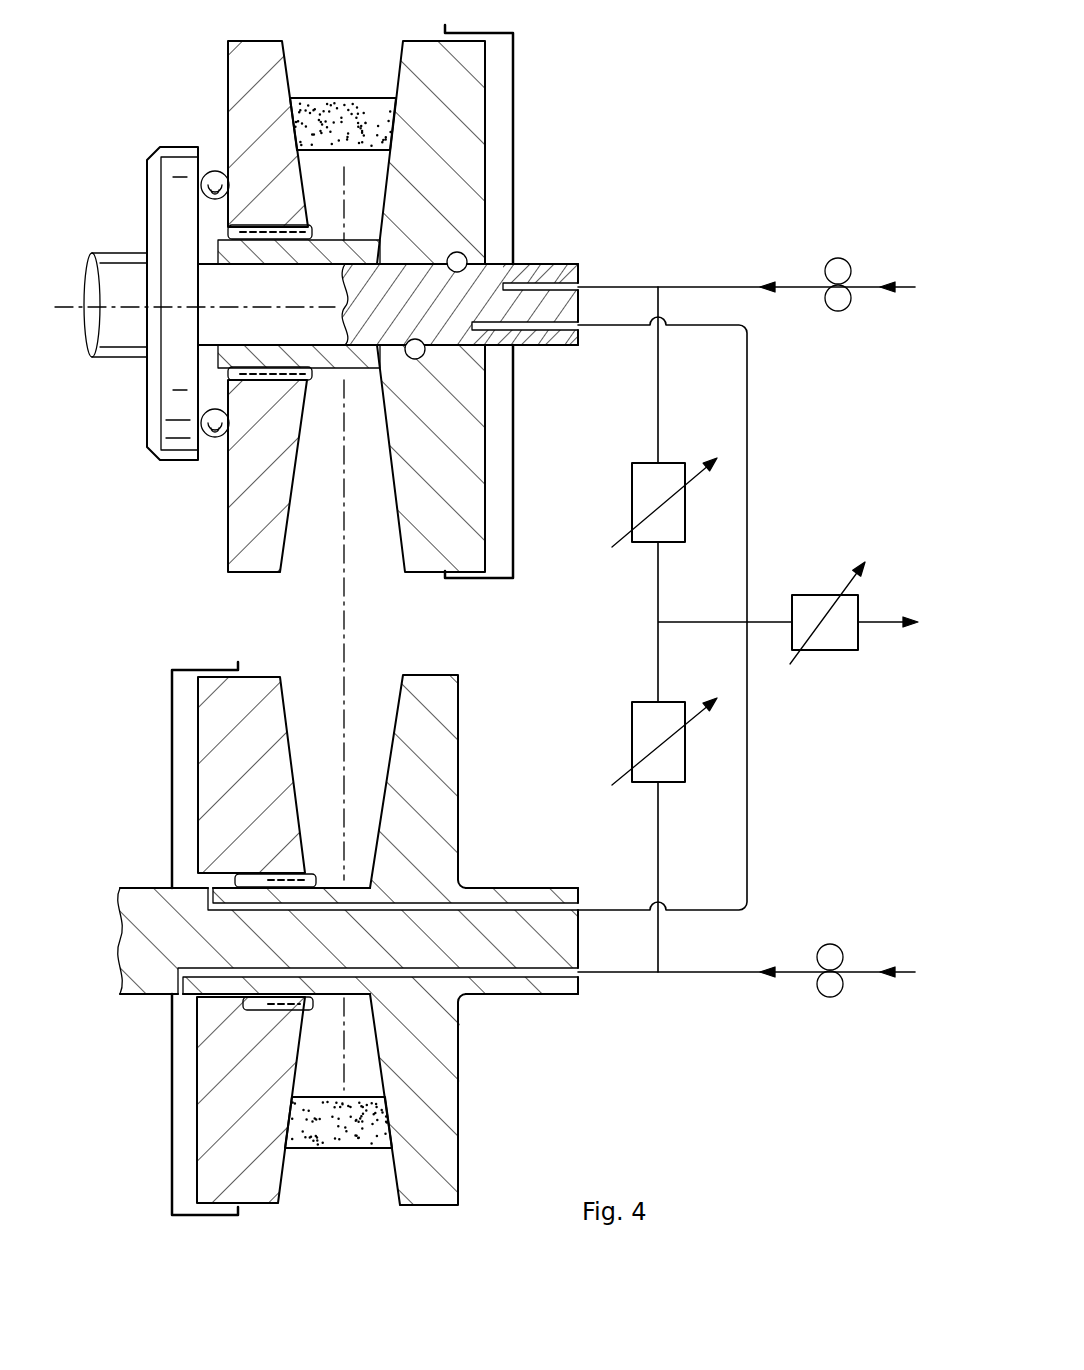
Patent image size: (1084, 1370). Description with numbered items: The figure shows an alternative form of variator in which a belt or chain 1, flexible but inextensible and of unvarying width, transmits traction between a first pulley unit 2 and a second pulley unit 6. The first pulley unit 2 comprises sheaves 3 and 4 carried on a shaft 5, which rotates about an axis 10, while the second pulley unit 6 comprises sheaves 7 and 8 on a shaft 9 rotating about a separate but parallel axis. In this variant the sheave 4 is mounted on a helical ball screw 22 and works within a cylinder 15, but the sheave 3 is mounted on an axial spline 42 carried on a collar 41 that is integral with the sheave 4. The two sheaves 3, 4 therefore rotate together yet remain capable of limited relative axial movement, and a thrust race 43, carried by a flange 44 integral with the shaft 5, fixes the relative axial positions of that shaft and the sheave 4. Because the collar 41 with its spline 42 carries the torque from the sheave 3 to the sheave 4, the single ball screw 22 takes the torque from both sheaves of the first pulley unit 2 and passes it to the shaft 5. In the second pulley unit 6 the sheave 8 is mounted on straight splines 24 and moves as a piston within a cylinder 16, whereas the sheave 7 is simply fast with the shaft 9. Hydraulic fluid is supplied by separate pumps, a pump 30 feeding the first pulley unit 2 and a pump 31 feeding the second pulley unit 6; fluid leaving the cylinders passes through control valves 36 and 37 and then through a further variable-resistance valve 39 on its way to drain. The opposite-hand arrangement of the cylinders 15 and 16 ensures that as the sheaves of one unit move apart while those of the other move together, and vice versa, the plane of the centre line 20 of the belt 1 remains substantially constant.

The belt or chain 1 is at (340, 96).
The first pulley unit 2 is at (548, 174).
The sheave 3 is at (268, 71).
The sheave 4 is at (460, 70).
The shaft 5 is at (548, 263).
The second pulley unit 6 is at (496, 800).
The sheave 7 is at (443, 743).
The sheave 8 is at (267, 697).
The shaft 9 is at (527, 887).
The axis 10 is at (150, 310).
The cylinder 15 is at (500, 119).
The cylinder 16 is at (186, 737).
The centre line 20 is at (337, 622).
The helical ball screw 22 is at (425, 338).
The straight splines 24 is at (310, 1000).
The pump 30 is at (838, 257).
The pump 31 is at (830, 943).
The control valve 36 is at (632, 483).
The control valve 37 is at (632, 719).
The variable-resistance valve 39 is at (808, 594).
The collar 41 is at (358, 238).
The axial spline 42 is at (308, 228).
The thrust race 43 is at (213, 158).
The flange 44 is at (172, 410).